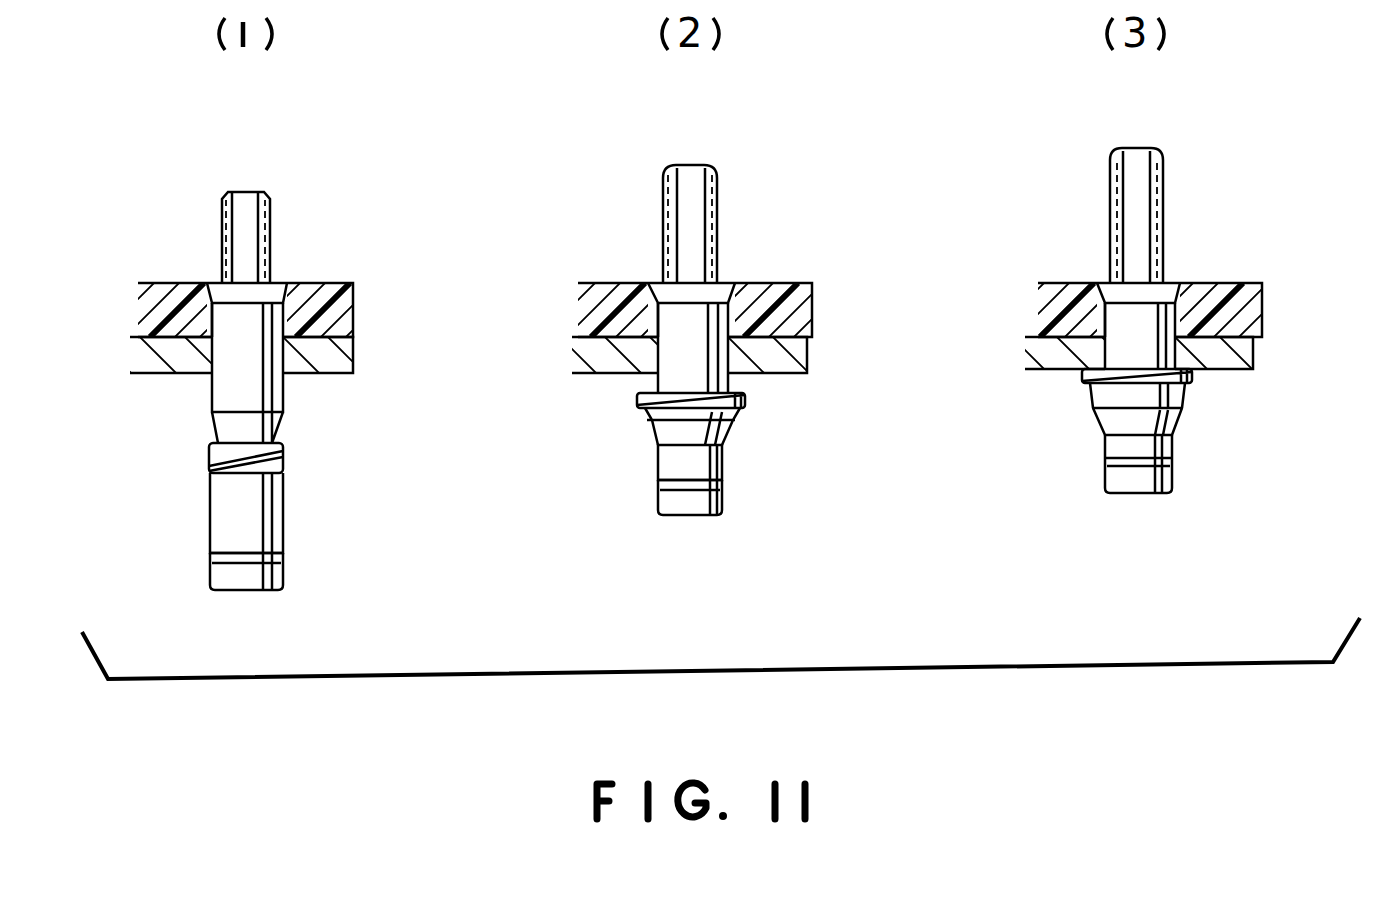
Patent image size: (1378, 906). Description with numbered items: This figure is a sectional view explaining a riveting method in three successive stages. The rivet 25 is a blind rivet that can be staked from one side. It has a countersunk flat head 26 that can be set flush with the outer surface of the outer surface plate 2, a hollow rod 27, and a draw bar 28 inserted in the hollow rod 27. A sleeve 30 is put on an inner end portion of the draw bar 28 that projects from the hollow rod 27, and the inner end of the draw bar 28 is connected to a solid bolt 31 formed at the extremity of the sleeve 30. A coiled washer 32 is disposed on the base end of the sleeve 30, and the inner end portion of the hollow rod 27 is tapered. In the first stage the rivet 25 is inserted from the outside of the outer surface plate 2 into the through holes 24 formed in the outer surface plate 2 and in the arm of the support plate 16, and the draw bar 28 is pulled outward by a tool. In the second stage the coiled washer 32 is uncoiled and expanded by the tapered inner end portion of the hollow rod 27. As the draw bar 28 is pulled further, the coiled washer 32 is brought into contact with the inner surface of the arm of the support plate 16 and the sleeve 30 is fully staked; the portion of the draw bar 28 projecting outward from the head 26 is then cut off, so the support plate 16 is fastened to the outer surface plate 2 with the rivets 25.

The outer surface plate 2 is at (340, 306).
The support plate 16 is at (335, 352).
The through holes 24 is at (207, 318).
The rivet 25 is at (215, 197).
The countersunk flat head 26 is at (282, 285).
The hollow rod 27 is at (285, 398).
The draw bar 28 is at (270, 219).
The sleeve 30 is at (285, 520).
The solid bolt 31 is at (285, 575).
The coiled washer 32 is at (285, 462).